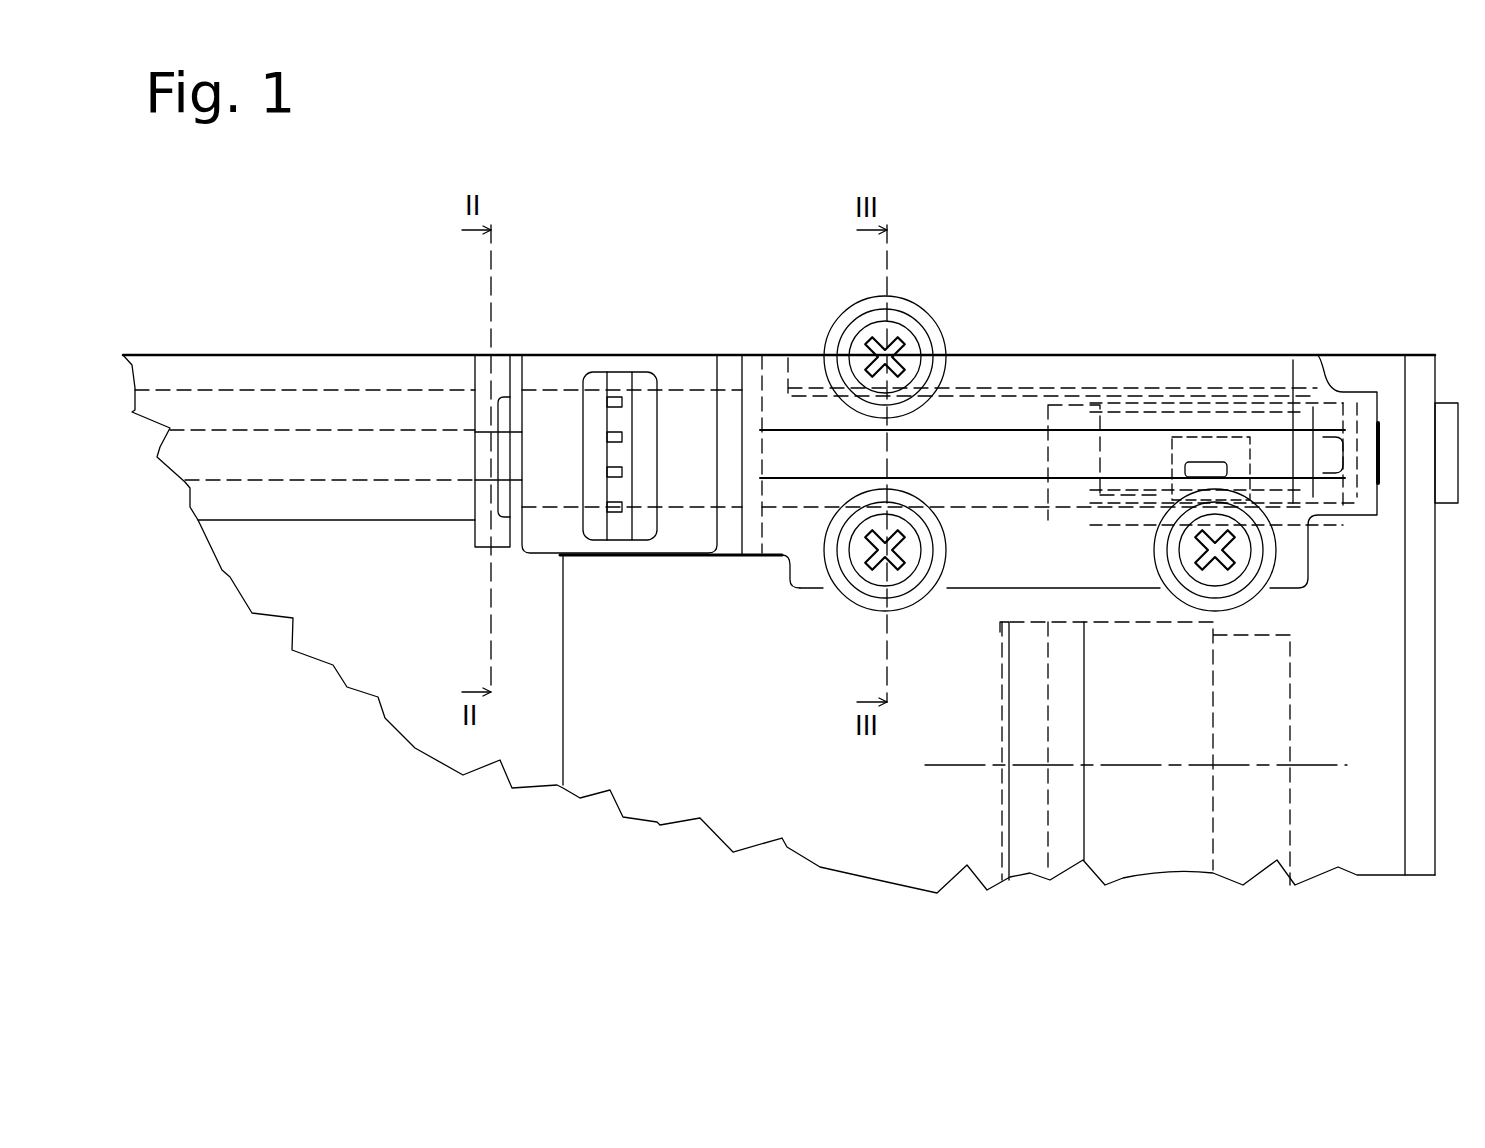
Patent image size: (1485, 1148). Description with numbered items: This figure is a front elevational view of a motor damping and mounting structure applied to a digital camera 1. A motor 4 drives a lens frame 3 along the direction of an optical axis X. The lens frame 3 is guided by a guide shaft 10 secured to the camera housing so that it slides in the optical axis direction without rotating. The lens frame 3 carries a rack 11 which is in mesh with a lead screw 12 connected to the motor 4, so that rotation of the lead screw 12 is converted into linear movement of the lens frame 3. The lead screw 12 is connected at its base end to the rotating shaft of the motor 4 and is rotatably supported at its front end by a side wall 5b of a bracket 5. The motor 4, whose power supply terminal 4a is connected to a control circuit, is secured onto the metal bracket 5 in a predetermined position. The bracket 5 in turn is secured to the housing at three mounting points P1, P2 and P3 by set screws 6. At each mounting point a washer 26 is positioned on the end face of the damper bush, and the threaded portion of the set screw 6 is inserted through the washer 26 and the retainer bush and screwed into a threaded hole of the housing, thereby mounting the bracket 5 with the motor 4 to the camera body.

The digital camera 1 is at (1245, 188).
The guide shaft 10 is at (305, 430).
The motor 4 is at (570, 372).
The power supply terminal 4a is at (625, 510).
The lead screw 12 is at (995, 420).
The bracket 5 is at (1098, 372).
The rack 11 is at (1167, 420).
The side wall 5b is at (1368, 410).
The washer 26 is at (875, 326).
The set screw 6 is at (893, 336).
The mounting point P1 is at (840, 602).
The mounting point P2 is at (813, 306).
The mounting point P3 is at (1267, 598).
The optical axis X is at (962, 768).
The lens frame 3 is at (1150, 830).